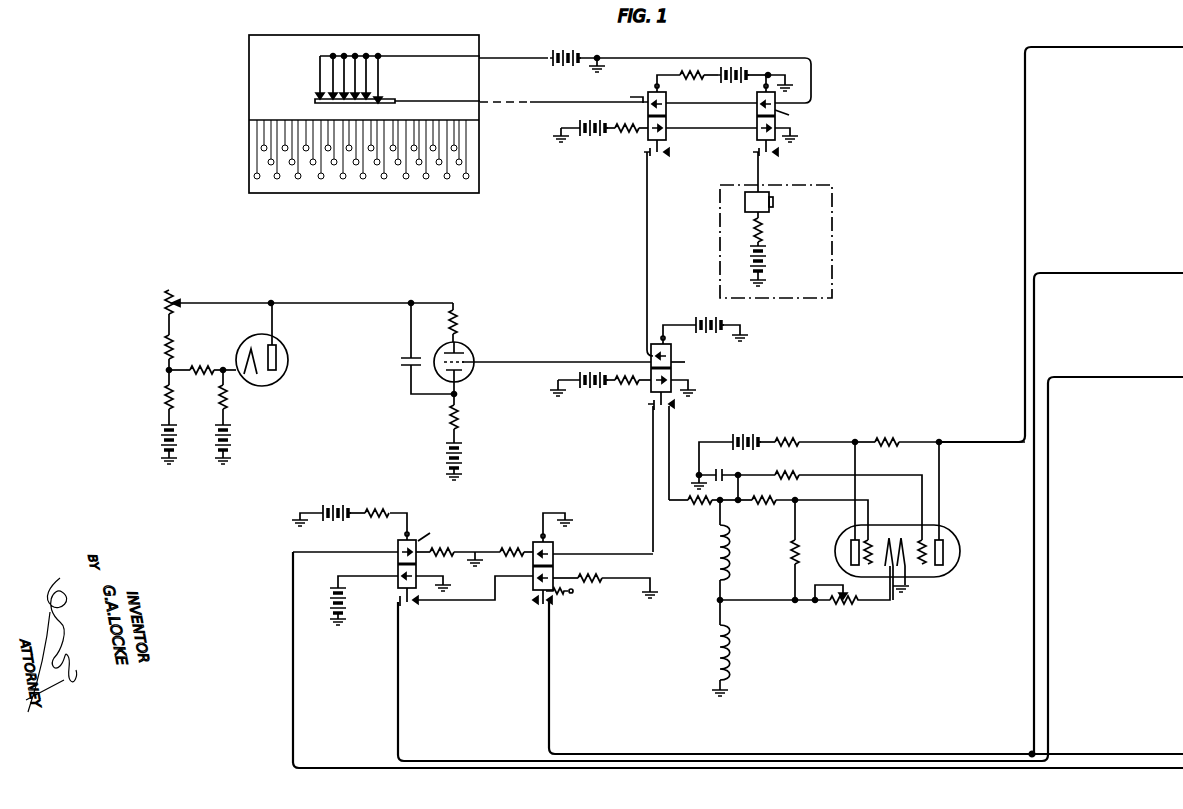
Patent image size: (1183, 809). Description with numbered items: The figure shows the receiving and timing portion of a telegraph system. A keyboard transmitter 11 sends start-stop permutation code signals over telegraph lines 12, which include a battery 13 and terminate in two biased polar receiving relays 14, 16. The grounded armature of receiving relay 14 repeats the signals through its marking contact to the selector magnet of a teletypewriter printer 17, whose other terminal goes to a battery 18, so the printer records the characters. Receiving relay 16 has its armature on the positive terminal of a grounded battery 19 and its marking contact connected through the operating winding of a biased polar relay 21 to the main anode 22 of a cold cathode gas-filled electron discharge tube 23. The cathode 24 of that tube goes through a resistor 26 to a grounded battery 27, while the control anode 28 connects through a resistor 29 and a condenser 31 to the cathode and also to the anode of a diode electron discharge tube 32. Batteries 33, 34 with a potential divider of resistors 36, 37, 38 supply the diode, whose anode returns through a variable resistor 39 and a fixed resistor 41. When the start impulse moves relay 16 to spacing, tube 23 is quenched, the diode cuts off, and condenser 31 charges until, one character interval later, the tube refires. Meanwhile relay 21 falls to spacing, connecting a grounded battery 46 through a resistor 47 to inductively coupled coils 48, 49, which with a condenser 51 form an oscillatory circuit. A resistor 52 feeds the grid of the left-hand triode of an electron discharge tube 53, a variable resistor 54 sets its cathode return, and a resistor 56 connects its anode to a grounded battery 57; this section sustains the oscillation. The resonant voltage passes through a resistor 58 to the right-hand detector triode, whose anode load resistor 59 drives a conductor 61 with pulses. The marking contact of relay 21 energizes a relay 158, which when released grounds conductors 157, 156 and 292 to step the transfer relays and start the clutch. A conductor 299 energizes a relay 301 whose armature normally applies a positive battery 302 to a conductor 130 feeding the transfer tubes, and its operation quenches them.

The keyboard transmitter 11 is at (249, 89).
The telegraph lines 12 is at (488, 60).
The battery 13 is at (566, 55).
The receiving relay 14 is at (757, 134).
The receiving relay 16 is at (666, 132).
The teletypewriter printer 17 is at (832, 205).
The battery 18 is at (720, 244).
The grounded battery 19 is at (728, 86).
The biased polar relay 21 is at (671, 352).
The main anode 22 is at (474, 356).
The cold cathode gas-filled electron discharge tube 23 is at (444, 350).
The cathode 24 is at (464, 378).
The resistor 26 is at (462, 420).
The grounded battery 27 is at (464, 452).
The control anode 28 is at (466, 348).
The resistor 29 is at (450, 327).
The condenser 31 is at (401, 360).
The diode electron discharge tube 32 is at (287, 349).
The battery 33 is at (161, 437).
The battery 34 is at (232, 437).
The resistor 36 is at (165, 397).
The resistor 37 is at (199, 352).
The resistor 38 is at (218, 397).
The variable resistor 39 is at (165, 303).
The fixed resistor 41 is at (165, 347).
The grounded battery 46 is at (700, 319).
The resistor 47 is at (704, 509).
The coil 48 is at (713, 551).
The coil 49 is at (713, 650).
The condenser 51 is at (721, 466).
The resistor 52 is at (774, 509).
The electron discharge tube 53 is at (956, 534).
The variable resistor 54 is at (850, 609).
The resistor 56 is at (786, 434).
The grounded battery 57 is at (743, 434).
The resistor 58 is at (784, 468).
The resistor 59 is at (886, 434).
The conductor 61 is at (1024, 143).
The conductor 130 is at (399, 675).
The conductor 156 is at (1123, 261).
The conductor 157 is at (797, 742).
The relay 158 is at (553, 540).
The conductor 292 is at (1125, 742).
The conductor 299 is at (344, 758).
The relay 301 is at (398, 544).
The positive battery 302 is at (367, 511).